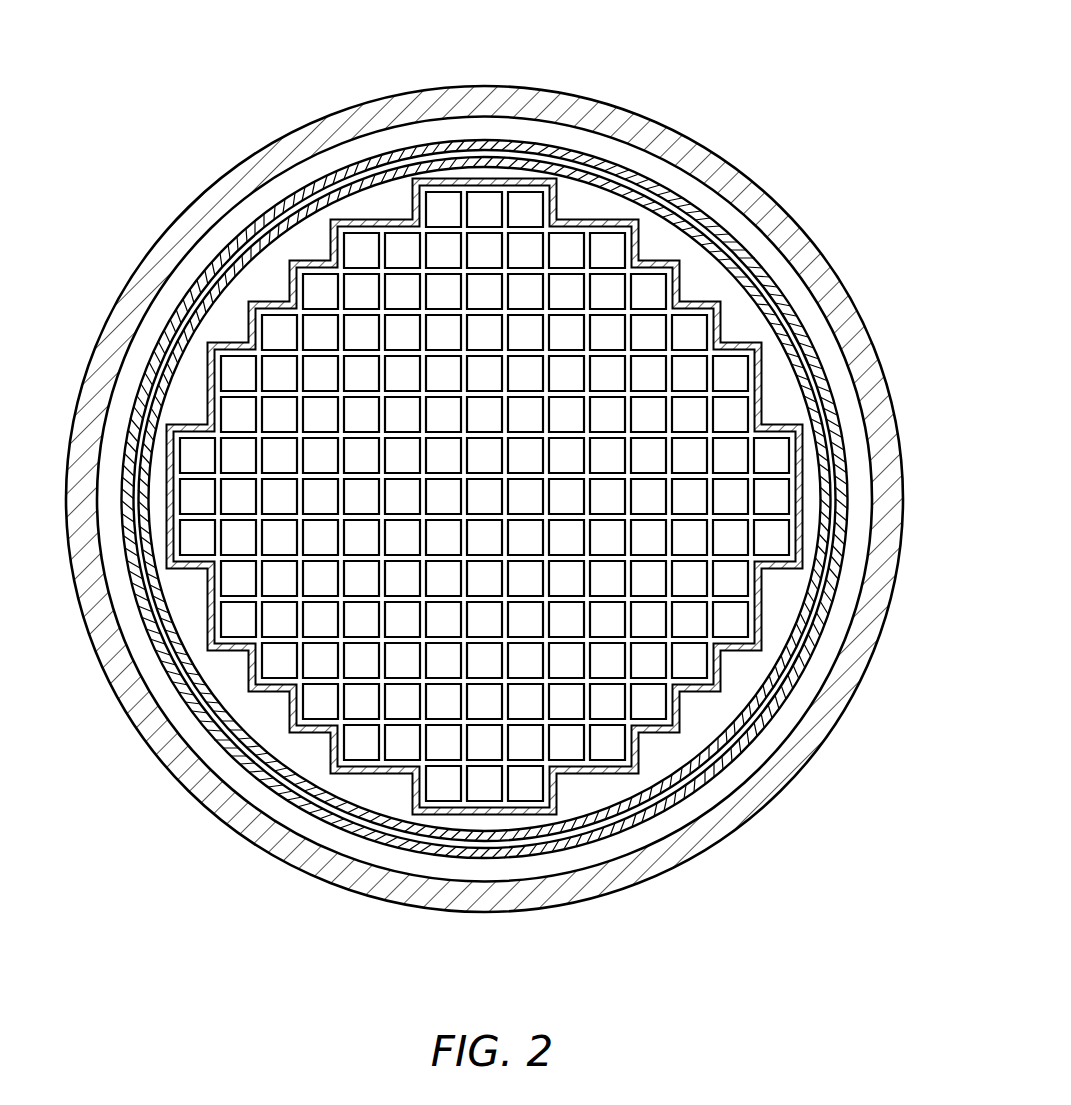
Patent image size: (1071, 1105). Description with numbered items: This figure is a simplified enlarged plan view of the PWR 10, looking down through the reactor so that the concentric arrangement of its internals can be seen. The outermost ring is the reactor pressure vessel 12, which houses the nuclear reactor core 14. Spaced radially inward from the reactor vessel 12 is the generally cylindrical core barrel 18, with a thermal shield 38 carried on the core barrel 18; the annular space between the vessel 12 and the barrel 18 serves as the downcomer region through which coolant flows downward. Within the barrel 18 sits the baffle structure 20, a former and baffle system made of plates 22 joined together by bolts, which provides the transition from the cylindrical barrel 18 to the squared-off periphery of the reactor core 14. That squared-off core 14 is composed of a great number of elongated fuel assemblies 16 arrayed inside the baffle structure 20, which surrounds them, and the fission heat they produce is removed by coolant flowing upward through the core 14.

The PWR 10 is at (702, 88).
The reactor pressure vessel 12 is at (764, 240).
The nuclear reactor core 14 is at (658, 243).
The fuel assemblies 16 is at (535, 248).
The core barrel 18 is at (481, 155).
The baffle structure 20 is at (313, 260).
The plates 22 is at (430, 140).
The thermal shield 38 is at (411, 189).